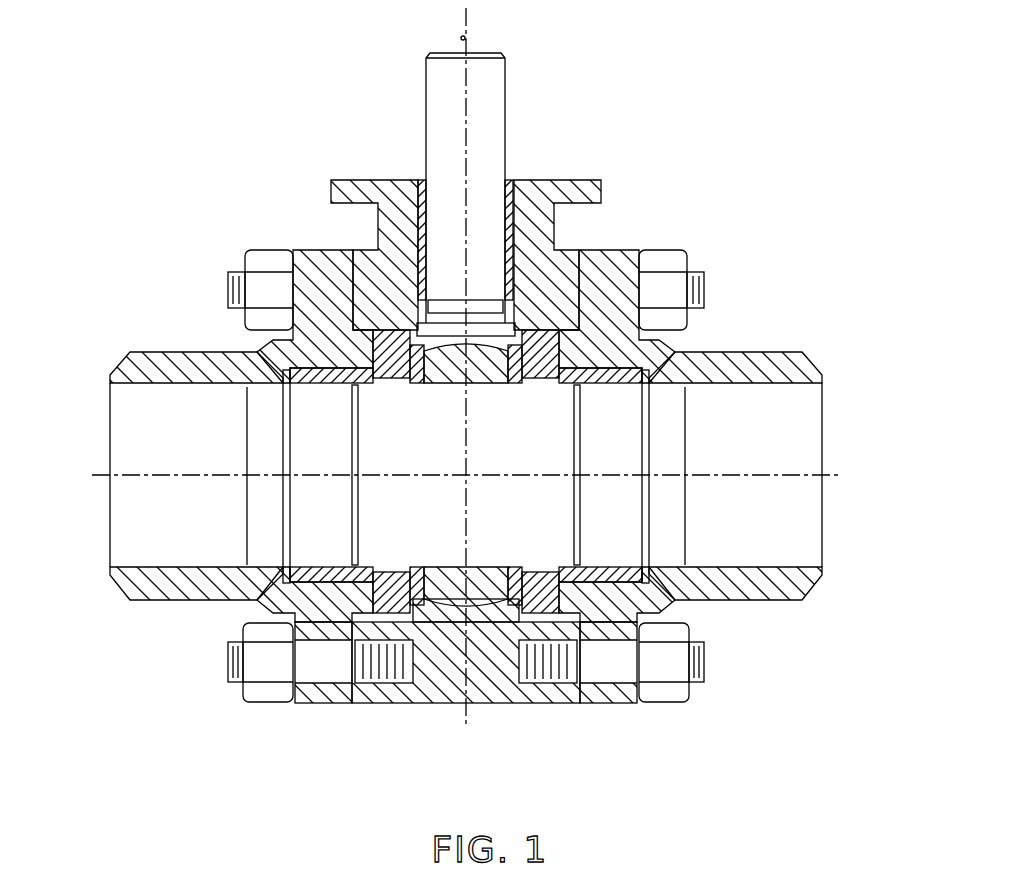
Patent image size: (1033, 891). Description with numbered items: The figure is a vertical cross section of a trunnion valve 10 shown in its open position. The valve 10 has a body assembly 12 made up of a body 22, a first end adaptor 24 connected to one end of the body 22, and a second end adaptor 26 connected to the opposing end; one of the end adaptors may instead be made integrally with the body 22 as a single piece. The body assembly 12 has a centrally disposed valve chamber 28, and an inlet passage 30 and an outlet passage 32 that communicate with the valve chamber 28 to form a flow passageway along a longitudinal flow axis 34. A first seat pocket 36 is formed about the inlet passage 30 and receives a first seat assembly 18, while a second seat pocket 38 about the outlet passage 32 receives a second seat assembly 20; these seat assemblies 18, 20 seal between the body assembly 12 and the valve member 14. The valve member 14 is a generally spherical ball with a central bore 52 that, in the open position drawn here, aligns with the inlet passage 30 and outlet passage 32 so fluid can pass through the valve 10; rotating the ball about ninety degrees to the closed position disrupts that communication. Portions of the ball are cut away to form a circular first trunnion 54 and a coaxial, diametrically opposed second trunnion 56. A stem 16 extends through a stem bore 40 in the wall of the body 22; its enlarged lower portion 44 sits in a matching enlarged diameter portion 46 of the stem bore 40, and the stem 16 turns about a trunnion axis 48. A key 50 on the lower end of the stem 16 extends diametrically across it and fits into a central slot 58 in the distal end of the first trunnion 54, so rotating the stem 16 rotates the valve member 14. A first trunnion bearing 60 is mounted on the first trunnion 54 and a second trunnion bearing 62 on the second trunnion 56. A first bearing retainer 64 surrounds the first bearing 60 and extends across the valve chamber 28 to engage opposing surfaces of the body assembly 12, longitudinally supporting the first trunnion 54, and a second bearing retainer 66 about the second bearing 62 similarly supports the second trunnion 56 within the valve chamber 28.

The valve 10 is at (636, 76).
The body assembly 12 is at (357, 176).
The valve member 14 is at (475, 560).
The stem 16 is at (426, 106).
The first seat assembly 18 is at (322, 395).
The second seat assembly 20 is at (612, 395).
The body 22 is at (552, 228).
The first end adaptor 24 is at (178, 348).
The second end adaptor 26 is at (748, 350).
The valve chamber 28 is at (420, 615).
The inlet passage 30 is at (160, 565).
The outlet passage 32 is at (800, 565).
The longitudinal flow axis 34 is at (95, 472).
The first seat pocket 36 is at (318, 590).
The second seat pocket 38 is at (613, 590).
The stem bore 40 is at (504, 186).
The lower portion of the stem 44 is at (423, 385).
The enlarged diameter portion of the stem bore 46 is at (580, 300).
The trunnion axis 48 is at (464, 37).
The key 50 is at (462, 360).
The central bore 52 is at (473, 560).
The first trunnion 54 is at (401, 355).
The second trunnion 56 is at (480, 575).
The central slot 58 is at (457, 385).
The first trunnion bearing 60 is at (533, 390).
The second trunnion bearing 62 is at (382, 572).
The first bearing retainer 64 is at (393, 330).
The second bearing retainer 66 is at (370, 548).